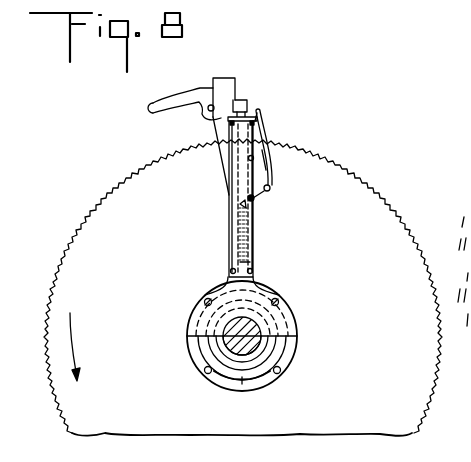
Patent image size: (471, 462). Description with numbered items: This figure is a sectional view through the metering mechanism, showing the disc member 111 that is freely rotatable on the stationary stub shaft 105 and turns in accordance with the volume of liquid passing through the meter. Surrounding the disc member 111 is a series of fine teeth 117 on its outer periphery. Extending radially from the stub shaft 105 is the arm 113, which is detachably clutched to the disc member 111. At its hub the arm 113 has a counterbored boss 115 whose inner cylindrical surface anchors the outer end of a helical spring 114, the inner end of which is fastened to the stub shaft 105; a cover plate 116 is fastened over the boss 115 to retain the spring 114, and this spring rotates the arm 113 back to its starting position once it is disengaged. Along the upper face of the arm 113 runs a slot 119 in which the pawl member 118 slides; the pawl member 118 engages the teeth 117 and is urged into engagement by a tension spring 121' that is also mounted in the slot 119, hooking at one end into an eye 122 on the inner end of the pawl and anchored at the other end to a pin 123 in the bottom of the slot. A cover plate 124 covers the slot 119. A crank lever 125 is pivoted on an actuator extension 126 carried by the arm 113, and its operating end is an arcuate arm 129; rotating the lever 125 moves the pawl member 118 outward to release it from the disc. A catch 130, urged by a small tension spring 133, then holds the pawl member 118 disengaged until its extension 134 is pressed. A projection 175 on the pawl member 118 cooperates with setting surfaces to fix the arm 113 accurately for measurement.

The stationary stub shaft 105 is at (225, 340).
The disc member 111 is at (365, 207).
The arm 113 is at (228, 228).
The helical spring 114 is at (270, 343).
The counterbored boss 115 is at (293, 365).
The cover plate 116 is at (290, 311).
The fine teeth 117 is at (356, 173).
The pawl member 118 is at (247, 113).
The slot 119 is at (232, 168).
The tension spring 121' is at (282, 234).
The eye 122 is at (254, 208).
The pin 123 is at (255, 262).
The cover plate 124 is at (261, 133).
The crank lever 125 is at (230, 79).
The actuator extension 126 is at (235, 88).
The arcuate arm 129 is at (153, 102).
The catch 130 is at (263, 162).
The small tension spring 133 is at (268, 199).
The extension 134 is at (259, 112).
The projection 175 is at (213, 117).